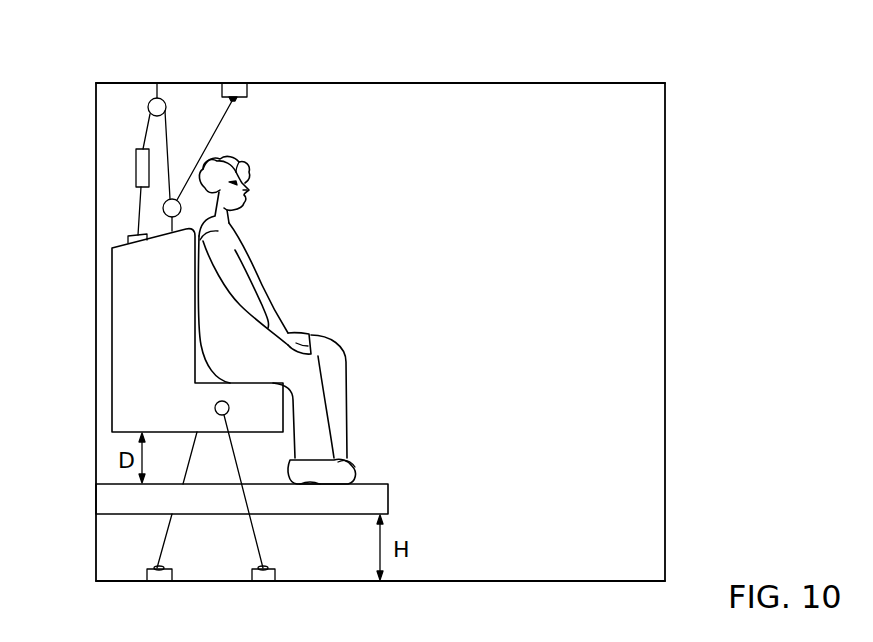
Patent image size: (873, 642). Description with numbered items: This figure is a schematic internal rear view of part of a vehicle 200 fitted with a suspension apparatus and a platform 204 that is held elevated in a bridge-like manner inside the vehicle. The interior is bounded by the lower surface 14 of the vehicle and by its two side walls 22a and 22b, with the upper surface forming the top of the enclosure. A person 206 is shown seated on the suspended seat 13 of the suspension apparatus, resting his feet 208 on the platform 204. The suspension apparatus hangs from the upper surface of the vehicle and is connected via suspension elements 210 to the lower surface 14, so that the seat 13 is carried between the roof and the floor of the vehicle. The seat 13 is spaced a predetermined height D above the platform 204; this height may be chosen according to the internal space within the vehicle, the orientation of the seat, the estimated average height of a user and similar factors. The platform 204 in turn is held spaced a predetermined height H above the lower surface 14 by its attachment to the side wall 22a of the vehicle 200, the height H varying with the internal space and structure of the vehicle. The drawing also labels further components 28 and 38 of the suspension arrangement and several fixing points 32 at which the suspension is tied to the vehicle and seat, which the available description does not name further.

The vehicle 200 is at (612, 80).
The side wall 22a is at (95, 466).
The side wall 22b is at (665, 392).
The lower surface 14 is at (447, 582).
The platform 204 is at (378, 500).
The seat 13 is at (135, 342).
The tensioner 28 is at (136, 184).
The pulley 38 is at (162, 205).
The anchors 32 is at (247, 92).
The suspension elements 210 is at (165, 545).
The person 206 is at (252, 260).
The feet 208 is at (350, 465).